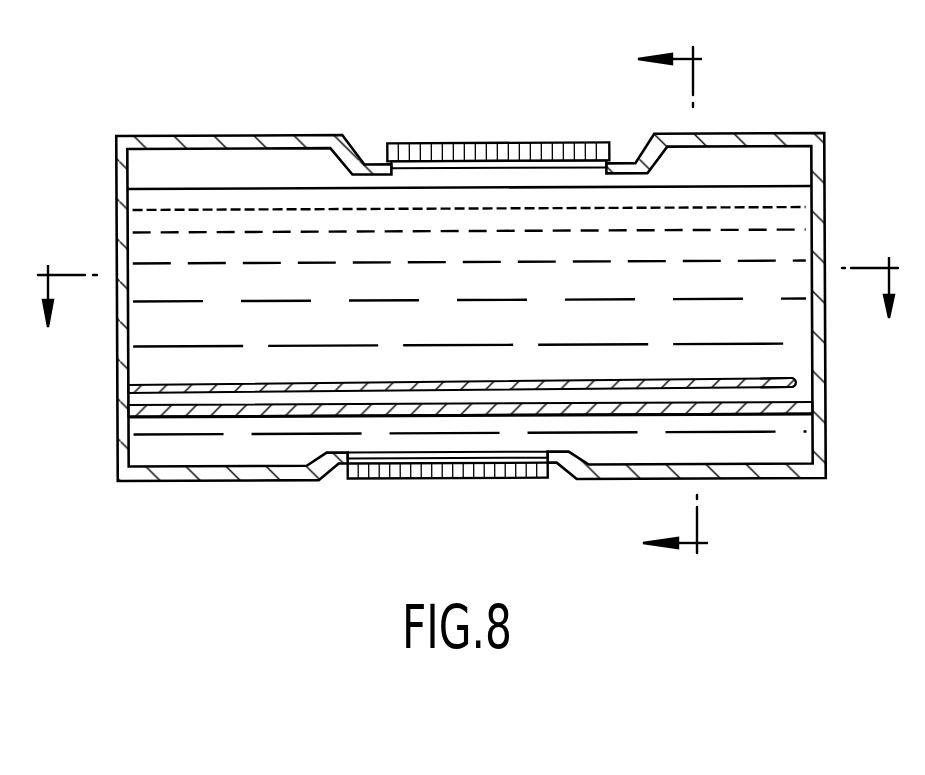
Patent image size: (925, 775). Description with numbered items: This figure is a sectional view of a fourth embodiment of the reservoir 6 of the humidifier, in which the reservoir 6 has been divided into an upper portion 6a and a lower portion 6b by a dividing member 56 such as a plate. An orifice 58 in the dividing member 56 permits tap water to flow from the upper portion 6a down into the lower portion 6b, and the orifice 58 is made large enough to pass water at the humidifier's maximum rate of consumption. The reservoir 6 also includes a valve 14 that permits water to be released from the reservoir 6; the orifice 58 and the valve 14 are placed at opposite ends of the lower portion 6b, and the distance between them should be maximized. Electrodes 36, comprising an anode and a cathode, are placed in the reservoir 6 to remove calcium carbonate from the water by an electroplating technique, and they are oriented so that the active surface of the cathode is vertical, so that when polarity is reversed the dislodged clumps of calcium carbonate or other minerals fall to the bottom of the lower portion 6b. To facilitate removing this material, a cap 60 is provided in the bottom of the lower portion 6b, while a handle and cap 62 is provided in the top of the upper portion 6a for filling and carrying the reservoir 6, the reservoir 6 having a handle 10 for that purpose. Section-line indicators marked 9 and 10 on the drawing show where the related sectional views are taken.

The reservoir 6 is at (201, 137).
The upper portion 6a is at (146, 202).
The lower portion 6b is at (147, 463).
The valve 14 is at (212, 475).
The electrodes 36 is at (157, 413).
The dividing member 56 is at (140, 388).
The orifice 58 is at (800, 383).
The cap 60 is at (382, 470).
The handle and cap 62 is at (495, 143).
The section line 9- 9 is at (655, 305).
The handle 10 is at (471, 315).